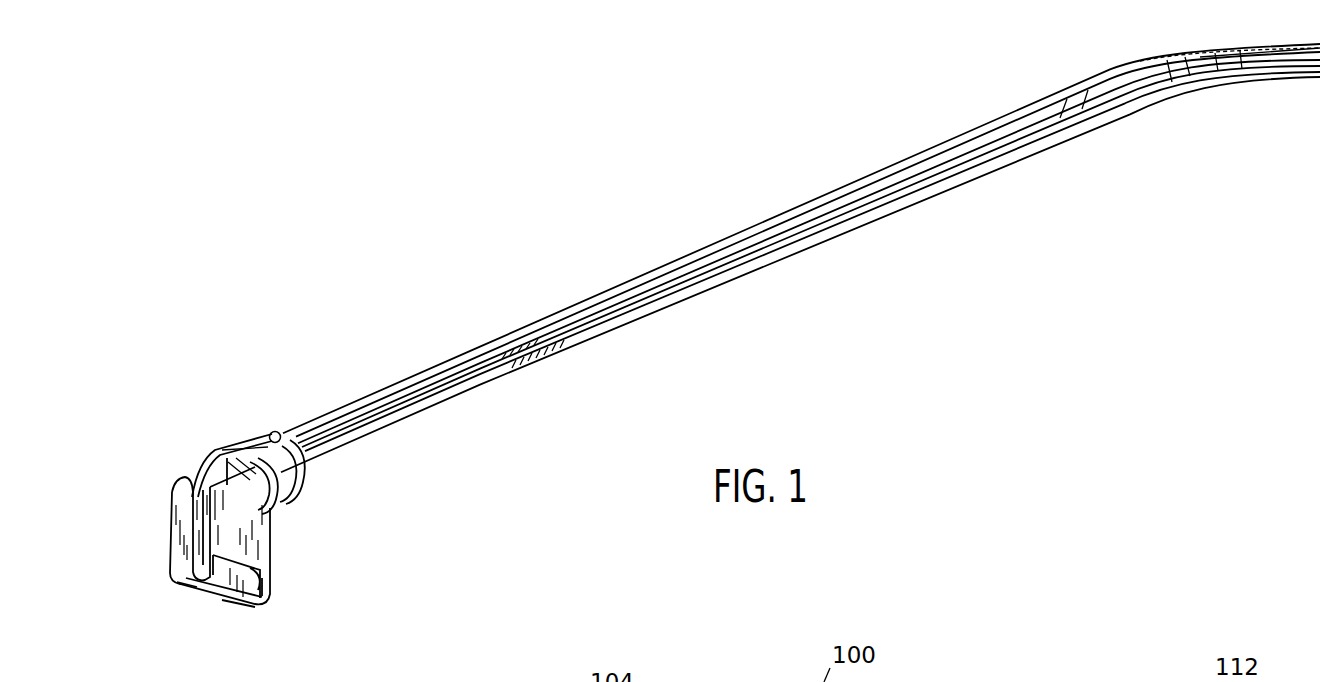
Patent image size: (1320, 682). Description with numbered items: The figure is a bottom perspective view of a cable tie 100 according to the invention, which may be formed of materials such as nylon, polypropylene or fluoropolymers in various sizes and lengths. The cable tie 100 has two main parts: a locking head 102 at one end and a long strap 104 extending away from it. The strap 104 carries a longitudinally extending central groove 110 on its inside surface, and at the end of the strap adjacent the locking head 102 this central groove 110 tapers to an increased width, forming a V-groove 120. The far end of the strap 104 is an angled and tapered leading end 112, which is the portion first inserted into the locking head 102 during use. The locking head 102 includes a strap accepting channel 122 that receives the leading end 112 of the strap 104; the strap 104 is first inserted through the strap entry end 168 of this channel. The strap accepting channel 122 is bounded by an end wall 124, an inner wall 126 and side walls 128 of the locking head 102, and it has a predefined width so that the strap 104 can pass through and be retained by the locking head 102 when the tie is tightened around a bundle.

The cable tie 100 is at (382, 345).
The locking head 102 is at (261, 550).
The strap 104 is at (788, 213).
The central groove 110 is at (638, 306).
The leading end 112 is at (1226, 80).
The V-groove 120 is at (280, 474).
The strap accepting channel 122 is at (232, 595).
The end wall 124 is at (207, 597).
The inner wall 126 is at (245, 512).
The side walls 128 is at (178, 515).
The strap entry end 168 is at (263, 593).